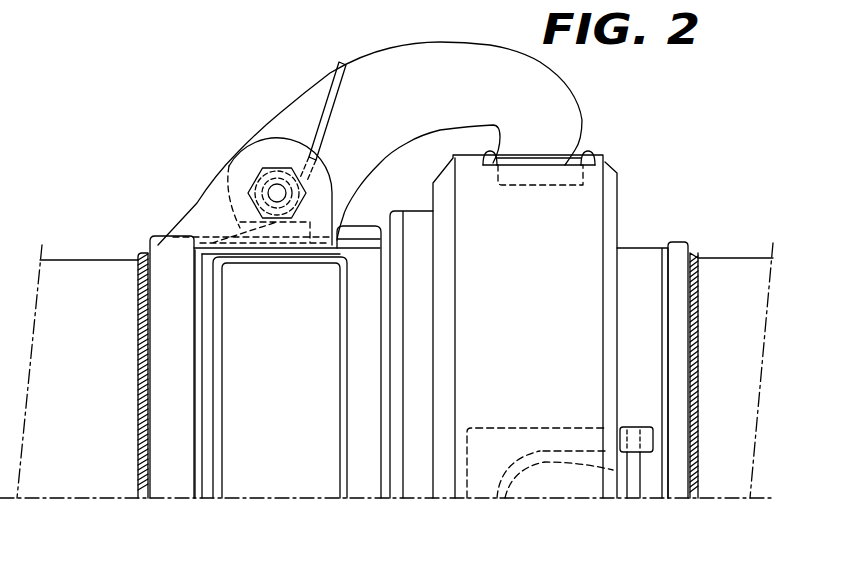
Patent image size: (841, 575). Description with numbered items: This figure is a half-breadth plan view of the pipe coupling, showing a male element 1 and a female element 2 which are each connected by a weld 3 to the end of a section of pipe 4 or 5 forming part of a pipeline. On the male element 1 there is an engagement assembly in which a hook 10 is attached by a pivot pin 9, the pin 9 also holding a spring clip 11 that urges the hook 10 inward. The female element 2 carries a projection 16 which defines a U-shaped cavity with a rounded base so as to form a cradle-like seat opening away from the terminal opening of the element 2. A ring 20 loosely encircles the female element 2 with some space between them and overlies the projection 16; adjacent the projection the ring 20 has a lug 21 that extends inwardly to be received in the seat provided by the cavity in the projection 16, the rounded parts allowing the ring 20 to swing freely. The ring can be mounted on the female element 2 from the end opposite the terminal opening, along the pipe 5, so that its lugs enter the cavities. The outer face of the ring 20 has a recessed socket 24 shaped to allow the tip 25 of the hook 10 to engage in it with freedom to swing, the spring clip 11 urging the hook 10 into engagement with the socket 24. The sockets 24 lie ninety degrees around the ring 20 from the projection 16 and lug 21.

The male element 1 is at (270, 346).
The female element 2 is at (397, 418).
The weld 3 is at (133, 300).
The section of pipe 4 is at (77, 371).
The section of pipe 5 is at (735, 370).
The pivot pin 9 is at (283, 160).
The hook 10 is at (370, 143).
The spring clip 11 is at (333, 110).
The projection 16 is at (535, 437).
The ring 20 is at (543, 326).
The lug 21 is at (552, 483).
The recessed socket 24 is at (582, 163).
The tip 25 is at (540, 156).